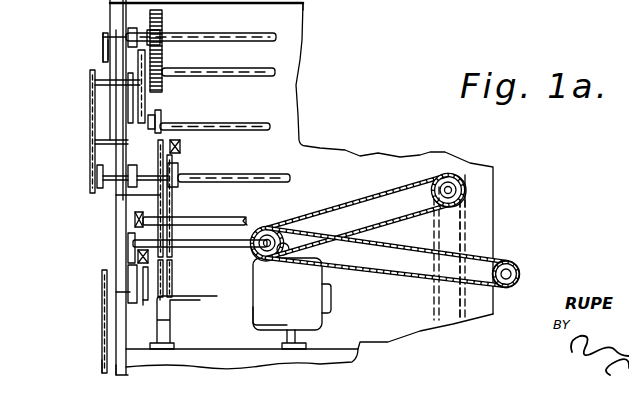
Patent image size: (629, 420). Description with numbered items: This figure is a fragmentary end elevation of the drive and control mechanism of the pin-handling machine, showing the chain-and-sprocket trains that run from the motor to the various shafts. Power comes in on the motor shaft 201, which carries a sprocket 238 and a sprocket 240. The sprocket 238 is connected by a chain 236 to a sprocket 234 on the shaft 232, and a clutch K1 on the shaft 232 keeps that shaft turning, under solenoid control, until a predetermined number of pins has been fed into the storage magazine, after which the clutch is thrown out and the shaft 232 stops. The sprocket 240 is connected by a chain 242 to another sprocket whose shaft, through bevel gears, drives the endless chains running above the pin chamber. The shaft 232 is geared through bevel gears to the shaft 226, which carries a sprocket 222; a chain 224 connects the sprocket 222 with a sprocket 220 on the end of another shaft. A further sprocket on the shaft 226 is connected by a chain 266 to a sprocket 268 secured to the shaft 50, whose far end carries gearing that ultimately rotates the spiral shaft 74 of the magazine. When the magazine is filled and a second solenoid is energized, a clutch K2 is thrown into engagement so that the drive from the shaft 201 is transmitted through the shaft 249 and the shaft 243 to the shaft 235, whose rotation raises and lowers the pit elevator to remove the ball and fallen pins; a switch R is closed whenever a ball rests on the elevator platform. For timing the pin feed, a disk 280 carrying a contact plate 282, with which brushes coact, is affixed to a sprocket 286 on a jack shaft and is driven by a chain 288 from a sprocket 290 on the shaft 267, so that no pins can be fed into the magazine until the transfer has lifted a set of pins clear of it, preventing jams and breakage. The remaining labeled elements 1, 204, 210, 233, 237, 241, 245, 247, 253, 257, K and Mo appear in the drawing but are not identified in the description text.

The machine frame 1 is at (123, 374).
The shaft 50 is at (515, 267).
The shaft 74 is at (467, 225).
The motor shaft 201 is at (115, 303).
The frame portion 204 is at (348, 6).
The bracket 210 is at (457, 183).
The sprocket 220 is at (440, 177).
The sprocket 222 is at (290, 252).
The chain 224 is at (368, 184).
The shaft 226 is at (265, 230).
The shaft 232 is at (217, 242).
The gear 233 is at (162, 13).
The sprocket 234 is at (133, 242).
The shaft 235 is at (244, 34).
The chain 236 is at (138, 257).
The hub 237 is at (110, 63).
The sprocket 238 is at (157, 303).
The sprocket 240 is at (103, 275).
The plate 241 is at (108, 62).
The chain 242 is at (103, 367).
The shaft 243 is at (237, 72).
The plate 245 is at (143, 100).
The shaft 247 is at (110, 133).
The shaft 249 is at (243, 124).
The bearing 253 is at (160, 300).
The lever 257 is at (160, 195).
The chain 266 is at (383, 275).
The shaft 267 is at (270, 163).
The sprocket 268 is at (503, 267).
The disk 280 is at (102, 45).
The contact plate 282 is at (103, 38).
The sprocket 286 is at (90, 72).
The chain 288 is at (93, 138).
The sprocket 290 is at (97, 180).
The clutch K is at (180, 145).
The clutch K1 is at (135, 220).
The clutch K2 is at (150, 258).
The motor Mo is at (196, 330).
The switch R is at (318, 6).